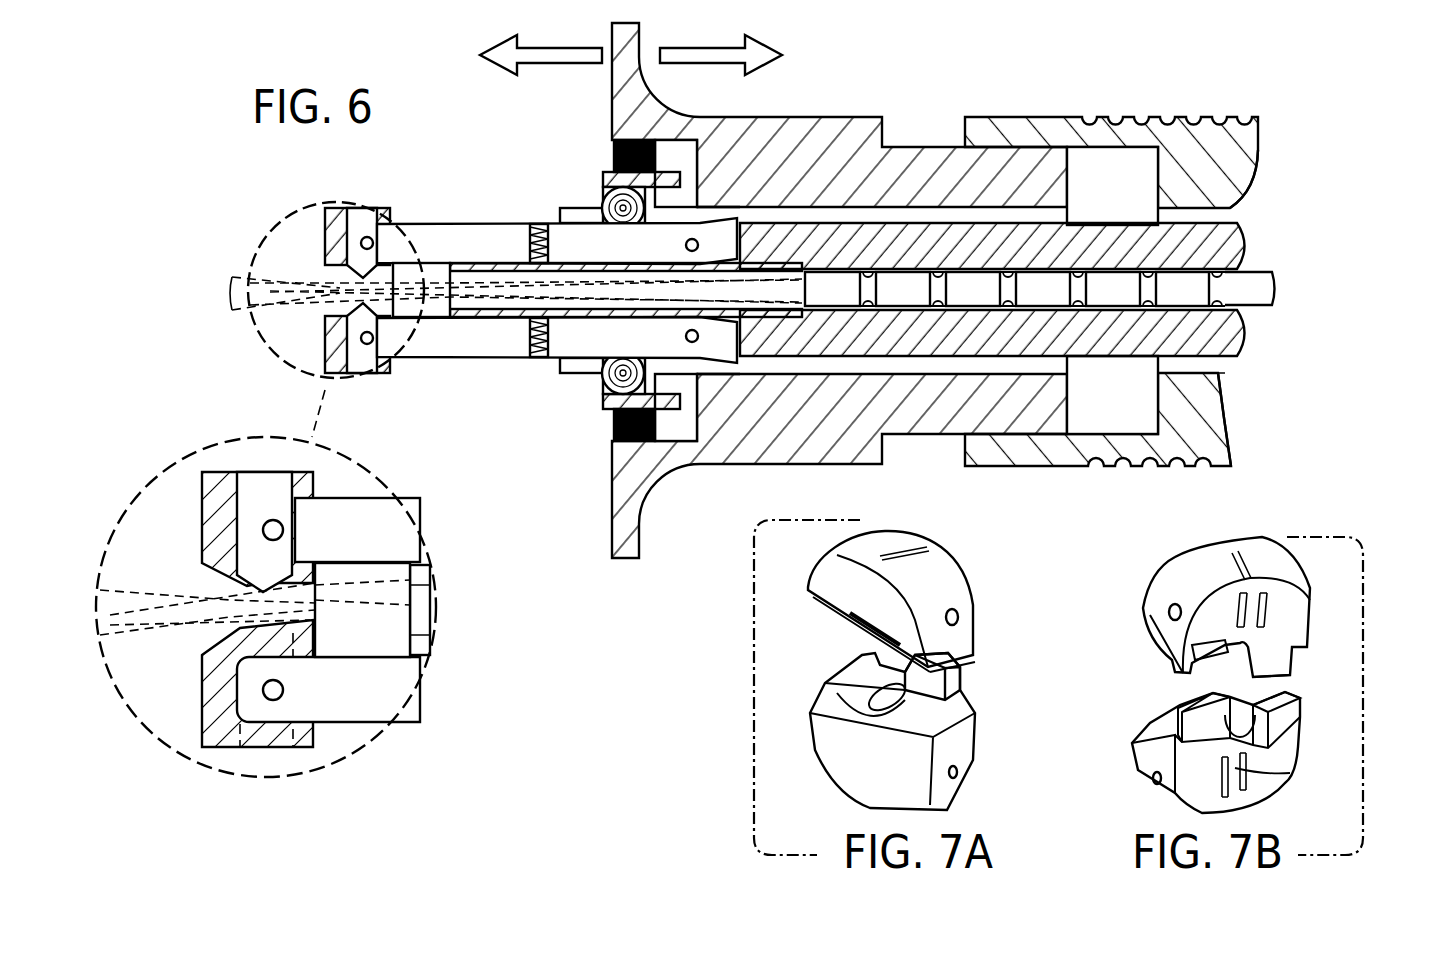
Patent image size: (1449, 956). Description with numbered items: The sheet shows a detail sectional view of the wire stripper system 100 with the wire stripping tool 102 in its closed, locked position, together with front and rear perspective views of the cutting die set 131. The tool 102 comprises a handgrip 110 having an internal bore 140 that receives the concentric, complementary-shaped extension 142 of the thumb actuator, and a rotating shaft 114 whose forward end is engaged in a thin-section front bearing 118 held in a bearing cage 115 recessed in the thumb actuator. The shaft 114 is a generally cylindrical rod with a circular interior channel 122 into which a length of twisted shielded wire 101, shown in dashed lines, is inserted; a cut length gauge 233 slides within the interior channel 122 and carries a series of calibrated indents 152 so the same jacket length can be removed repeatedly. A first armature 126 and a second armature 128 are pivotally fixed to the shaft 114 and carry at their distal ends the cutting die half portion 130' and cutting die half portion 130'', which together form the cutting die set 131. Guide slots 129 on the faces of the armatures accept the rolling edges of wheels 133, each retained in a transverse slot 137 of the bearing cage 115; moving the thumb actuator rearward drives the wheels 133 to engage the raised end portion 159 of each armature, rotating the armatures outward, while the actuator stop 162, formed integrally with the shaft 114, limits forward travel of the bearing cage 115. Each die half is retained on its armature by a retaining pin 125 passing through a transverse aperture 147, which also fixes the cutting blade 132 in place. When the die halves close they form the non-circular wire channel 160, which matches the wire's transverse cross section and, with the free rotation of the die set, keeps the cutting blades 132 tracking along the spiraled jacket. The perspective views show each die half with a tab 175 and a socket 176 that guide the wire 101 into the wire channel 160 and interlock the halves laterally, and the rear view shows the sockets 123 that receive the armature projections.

In FIG. 6, the wire stripper system 100 is at (1190, 96).
In FIG. 6, the twisted shielded wire 101 is at (240, 278).
In FIG. 6, the wire stripping tool 102 is at (1276, 170).
In FIG. 6, the handgrip 110 is at (1045, 117).
In FIG. 6, the rotating shaft 114 is at (1248, 235).
In FIG. 6, the bearing cage 115 is at (603, 174).
In FIG. 6, the front bearing 118 is at (614, 152).
In FIG. 6, the interior channel 122 is at (500, 263).
In FIG. 7B, the sockets 123 is at (1280, 778).
In FIG. 6, the retaining pin 125 is at (284, 528).
In FIG. 6, the first armature 126 is at (438, 225).
In FIG. 6, the second armature 128 is at (477, 357).
In FIG. 6, the guide slots 129 is at (642, 226).
In FIG. 6, the cutting die half portion 130' is at (264, 388).
In FIG. 7A, the cutting die half portion 130' is at (912, 601).
In FIG. 7B, the cutting die half portion 130' is at (1196, 607).
In FIG. 6, the cutting die half portion 130'' is at (268, 531).
In FIG. 7A, the cutting die half portion 130'' is at (876, 731).
In FIG. 7B, the cutting die half portion 130'' is at (1243, 743).
In FIG. 7A, the cutting die set 131 is at (806, 652).
In FIG. 7B, the cutting die set 131 is at (1334, 613).
In FIG. 6, the cutting blades 132 is at (360, 208).
In FIG. 7A, the cutting blades 132 is at (856, 705).
In FIG. 7B, the cutting blades 132 is at (1262, 726).
In FIG. 6, the rolling wheels 133 is at (603, 208).
In FIG. 6, the transverse slot 137 is at (662, 190).
In FIG. 6, the internal bore 140 is at (1100, 194).
In FIG. 6, the extension 142 is at (920, 140).
In FIG. 7A, the transverse aperture 147 is at (960, 617).
In FIG. 7B, the transverse aperture 147 is at (1169, 614).
In FIG. 6, the calibrated indents 152 is at (1222, 292).
In FIG. 6, the raised end portion 159 is at (727, 207).
In FIG. 6, the wire channel 160 is at (330, 560).
In FIG. 6, the actuator stop 162 is at (578, 372).
In FIG. 7A, the tab 175 is at (960, 700).
In FIG. 7B, the tab 175 is at (1178, 708).
In FIG. 7B, the socket 176 is at (1190, 650).
In FIG. 6, the cut length gauge 233 is at (1268, 273).